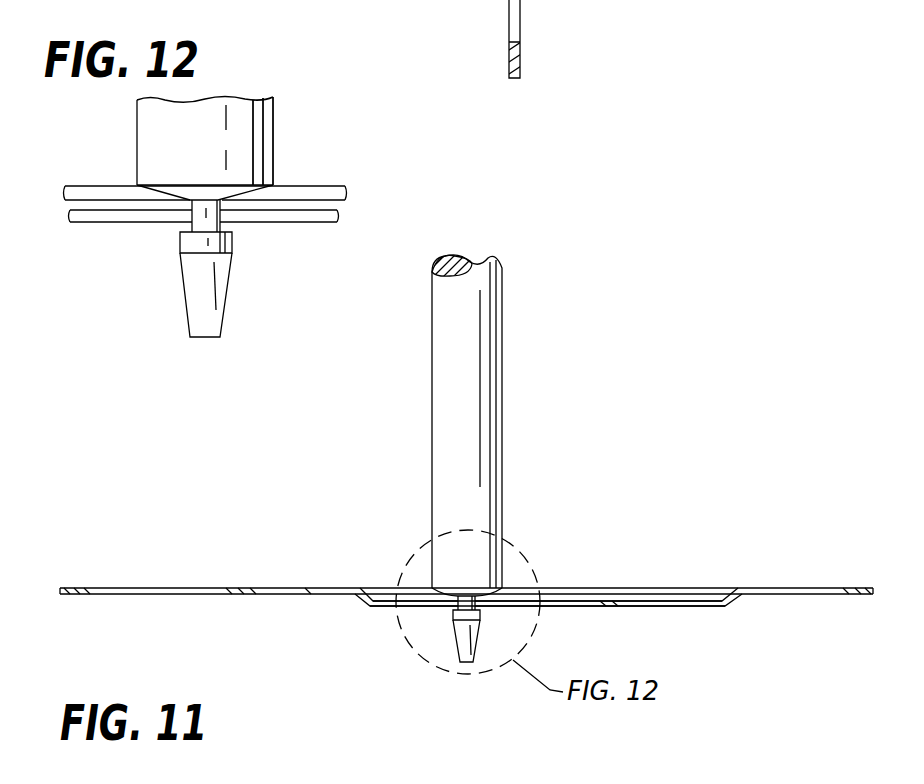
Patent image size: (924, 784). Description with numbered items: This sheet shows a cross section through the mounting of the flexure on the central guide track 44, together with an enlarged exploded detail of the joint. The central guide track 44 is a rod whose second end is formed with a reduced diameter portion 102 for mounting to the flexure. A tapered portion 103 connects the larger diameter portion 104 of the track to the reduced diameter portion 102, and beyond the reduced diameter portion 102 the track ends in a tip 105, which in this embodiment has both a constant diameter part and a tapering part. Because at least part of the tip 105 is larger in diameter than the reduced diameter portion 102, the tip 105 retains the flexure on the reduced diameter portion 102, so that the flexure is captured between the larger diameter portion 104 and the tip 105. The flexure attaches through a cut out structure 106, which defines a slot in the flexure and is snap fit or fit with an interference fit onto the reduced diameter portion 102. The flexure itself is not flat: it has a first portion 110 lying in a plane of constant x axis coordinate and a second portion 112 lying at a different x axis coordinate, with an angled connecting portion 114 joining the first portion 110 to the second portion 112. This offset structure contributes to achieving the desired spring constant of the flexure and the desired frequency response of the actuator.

In FIG. 12, the central guide track 44 is at (140, 119).
In FIG. 11, the central guide track 44 is at (492, 355).
In FIG. 12, the reduced diameter portion 102 is at (215, 223).
In FIG. 11, the reduced diameter portion 102 is at (477, 613).
In FIG. 12, the tapered portion 103 is at (233, 197).
In FIG. 11, the tapered portion 103 is at (477, 592).
In FIG. 12, the larger diameter portion 104 is at (265, 113).
In FIG. 12, the tip 105 is at (190, 300).
In FIG. 11, the tip 105 is at (468, 655).
In FIG. 12, the cut out structure 106 is at (160, 223).
In FIG. 11, the cut out structure 106 is at (447, 605).
In FIG. 11, the first portion 110 is at (722, 606).
In FIG. 11, the second portion 112 is at (88, 596).
In FIG. 11, the connecting portion 114 is at (363, 597).